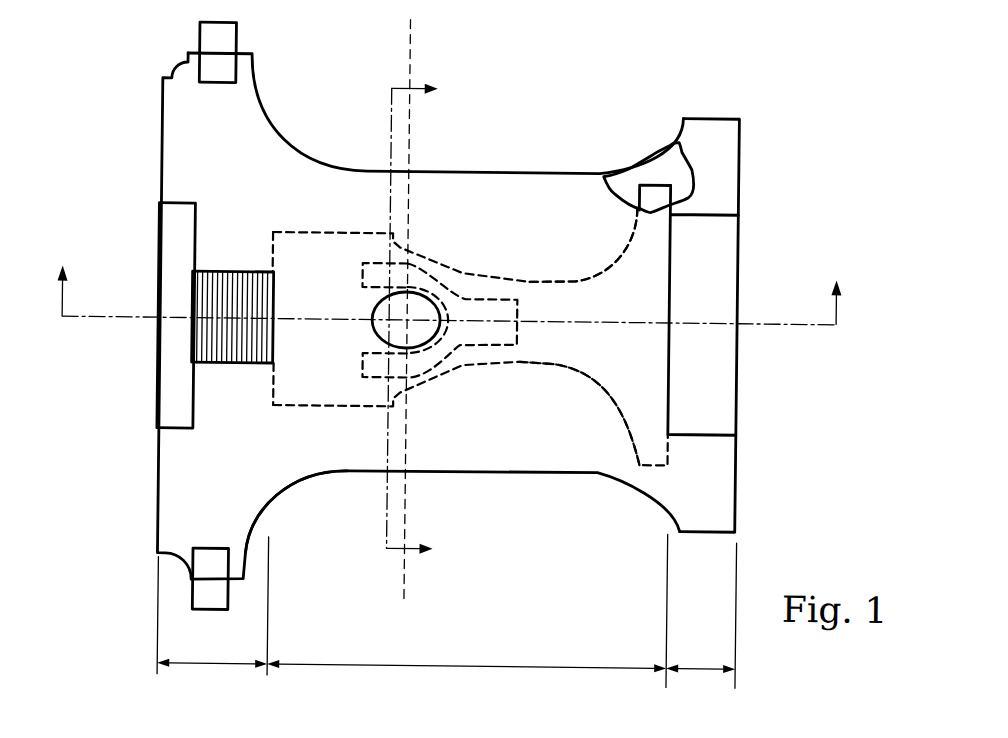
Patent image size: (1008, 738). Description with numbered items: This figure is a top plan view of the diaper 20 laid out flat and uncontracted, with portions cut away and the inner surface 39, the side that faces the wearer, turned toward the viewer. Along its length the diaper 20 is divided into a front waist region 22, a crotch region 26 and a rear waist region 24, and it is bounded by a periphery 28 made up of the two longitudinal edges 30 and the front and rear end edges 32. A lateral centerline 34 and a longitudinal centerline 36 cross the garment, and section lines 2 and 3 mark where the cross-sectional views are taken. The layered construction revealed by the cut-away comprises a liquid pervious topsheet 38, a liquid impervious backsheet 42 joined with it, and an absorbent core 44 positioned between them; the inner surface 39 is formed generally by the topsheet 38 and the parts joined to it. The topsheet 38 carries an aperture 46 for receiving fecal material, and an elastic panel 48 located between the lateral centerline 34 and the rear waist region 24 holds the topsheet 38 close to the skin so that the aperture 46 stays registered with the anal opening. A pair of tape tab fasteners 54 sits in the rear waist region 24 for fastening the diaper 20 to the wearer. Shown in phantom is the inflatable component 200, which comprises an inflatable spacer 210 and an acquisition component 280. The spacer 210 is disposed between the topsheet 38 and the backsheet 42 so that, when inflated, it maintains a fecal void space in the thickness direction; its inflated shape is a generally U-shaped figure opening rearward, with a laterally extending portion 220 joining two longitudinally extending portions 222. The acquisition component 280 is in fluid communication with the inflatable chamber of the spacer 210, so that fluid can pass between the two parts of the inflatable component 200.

The diaper 20 is at (755, 100).
The front waist region 22 is at (695, 668).
The rear waist region 24 is at (212, 660).
The crotch region 26 is at (475, 664).
The periphery 28 is at (266, 521).
The longitudinal edges 30 is at (452, 172).
The front and rear end edges 32 is at (160, 110).
The lateral centerline 34 is at (409, 32).
The longitudinal centerline 36 is at (110, 329).
The topsheet 38 is at (574, 197).
The inner surface 39 is at (636, 298).
The backsheet 42 is at (670, 158).
The absorbent core 44 is at (642, 190).
The aperture 46 is at (384, 324).
The elastic panel 48 is at (212, 275).
The tape tab fasteners 54 is at (212, 40).
The inflatable component 200 is at (478, 276).
The inflatable spacer 210 is at (450, 367).
The laterally extending portion 220 is at (462, 316).
The longitudinally extending portions 222 is at (381, 283).
The acquisition component 280 is at (490, 364).
The section line 2- 2 is at (448, 281).
The section line 3- 3 is at (424, 322).